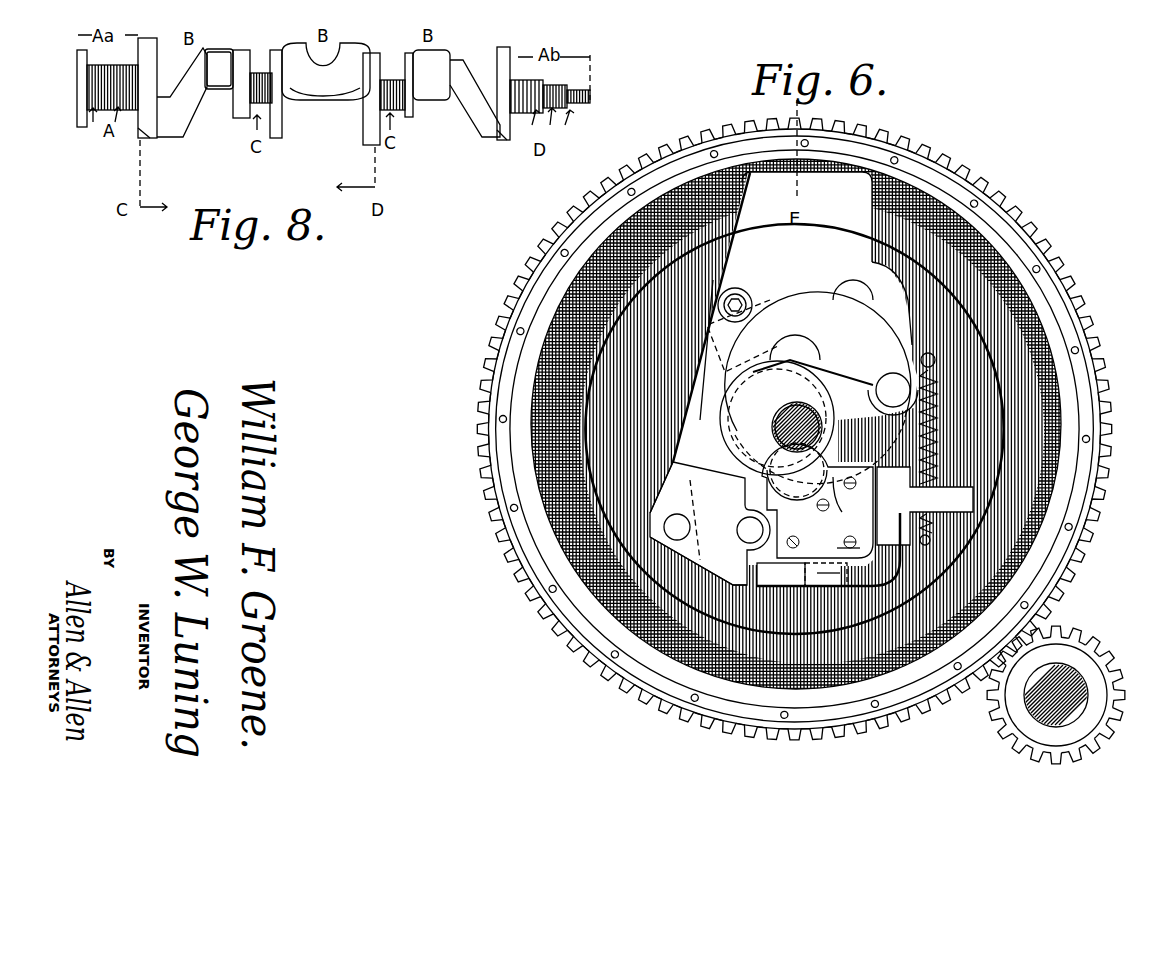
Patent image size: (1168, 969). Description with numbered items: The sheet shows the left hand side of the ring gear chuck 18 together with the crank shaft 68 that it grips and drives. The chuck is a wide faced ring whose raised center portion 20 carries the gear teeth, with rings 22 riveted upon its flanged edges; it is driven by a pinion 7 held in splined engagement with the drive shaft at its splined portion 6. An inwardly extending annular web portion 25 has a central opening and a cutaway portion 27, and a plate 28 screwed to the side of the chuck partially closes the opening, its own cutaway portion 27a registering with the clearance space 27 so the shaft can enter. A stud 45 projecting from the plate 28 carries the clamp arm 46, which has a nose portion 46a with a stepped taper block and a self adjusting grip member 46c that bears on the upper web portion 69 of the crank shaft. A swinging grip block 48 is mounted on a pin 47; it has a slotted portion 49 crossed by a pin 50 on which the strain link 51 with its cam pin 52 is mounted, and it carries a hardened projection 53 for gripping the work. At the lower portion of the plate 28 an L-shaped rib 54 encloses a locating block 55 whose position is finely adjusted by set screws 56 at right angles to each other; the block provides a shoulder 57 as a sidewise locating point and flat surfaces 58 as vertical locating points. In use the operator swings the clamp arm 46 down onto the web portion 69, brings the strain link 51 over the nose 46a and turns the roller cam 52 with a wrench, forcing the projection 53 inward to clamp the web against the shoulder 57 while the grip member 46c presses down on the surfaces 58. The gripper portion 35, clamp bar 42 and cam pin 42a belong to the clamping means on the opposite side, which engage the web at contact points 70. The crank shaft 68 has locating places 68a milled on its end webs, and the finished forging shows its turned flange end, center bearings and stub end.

In FIG. 6, the splined portion of drive shaft 6 is at (1085, 678).
In FIG. 6, the pinion 7 is at (1010, 730).
In FIG. 6, the ring gear chuck 18 is at (725, 703).
In FIG. 6, the raised center portion 20 is at (497, 325).
In FIG. 6, the ring 22 is at (505, 385).
In FIG. 6, the annular web portion 25 is at (570, 497).
In FIG. 6, the cutaway portion 27 is at (765, 205).
In FIG. 6, the cutaway portion of plate 27a is at (713, 280).
In FIG. 6, the plate 28 is at (940, 312).
In FIG. 6, the gripper portion 35 is at (885, 385).
In FIG. 6, the clamp bar 42 is at (823, 272).
In FIG. 6, the pin with roller cam 42a is at (850, 287).
In FIG. 6, the stud 45 is at (933, 377).
In FIG. 6, the clamp arm 46 is at (830, 330).
In FIG. 6, the nose portion 46a is at (818, 361).
In FIG. 6, the self adjusting grip member 46c is at (800, 353).
In FIG. 6, the pin 47 is at (740, 530).
In FIG. 6, the swinging grip block 48 is at (740, 578).
In FIG. 6, the slotted portion 49 is at (699, 518).
In FIG. 6, the pin 50 is at (690, 527).
In FIG. 6, the strain link 51 is at (693, 420).
In FIG. 6, the cam pin 52 is at (745, 297).
In FIG. 6, the hardened projection 53 is at (773, 460).
In FIG. 6, the L-shaped rib 54 is at (817, 573).
In FIG. 6, the locating block 55 is at (837, 548).
In FIG. 6, the set screw 56 is at (864, 526).
In FIG. 6, the shoulder 57 is at (849, 499).
In FIG. 6, the flat surfaces 58 is at (817, 500).
In FIG. 8, the crank shaft 68 is at (324, 112).
In FIG. 6, the crank shaft 68 is at (795, 410).
In FIG. 8, the locating place 68a is at (145, 133).
In FIG. 6, the locating place 68a is at (767, 440).
In FIG. 6, the upper web portion 69 is at (813, 370).
In FIG. 8, the contact point 70 is at (240, 50).